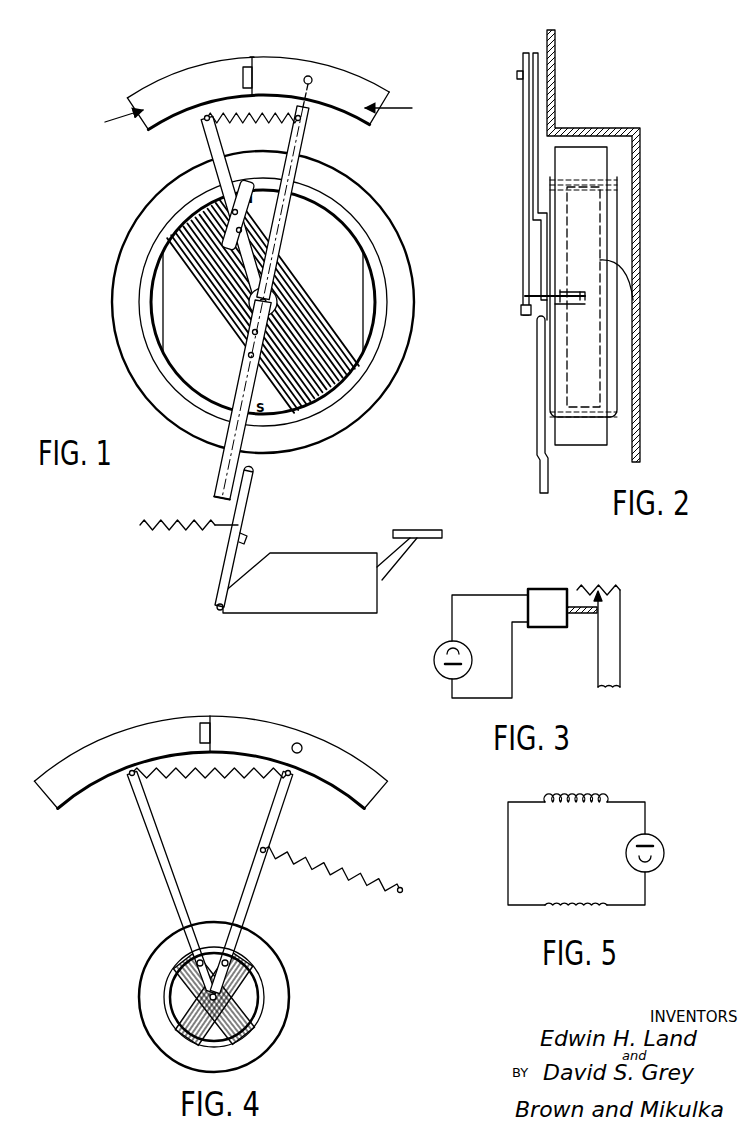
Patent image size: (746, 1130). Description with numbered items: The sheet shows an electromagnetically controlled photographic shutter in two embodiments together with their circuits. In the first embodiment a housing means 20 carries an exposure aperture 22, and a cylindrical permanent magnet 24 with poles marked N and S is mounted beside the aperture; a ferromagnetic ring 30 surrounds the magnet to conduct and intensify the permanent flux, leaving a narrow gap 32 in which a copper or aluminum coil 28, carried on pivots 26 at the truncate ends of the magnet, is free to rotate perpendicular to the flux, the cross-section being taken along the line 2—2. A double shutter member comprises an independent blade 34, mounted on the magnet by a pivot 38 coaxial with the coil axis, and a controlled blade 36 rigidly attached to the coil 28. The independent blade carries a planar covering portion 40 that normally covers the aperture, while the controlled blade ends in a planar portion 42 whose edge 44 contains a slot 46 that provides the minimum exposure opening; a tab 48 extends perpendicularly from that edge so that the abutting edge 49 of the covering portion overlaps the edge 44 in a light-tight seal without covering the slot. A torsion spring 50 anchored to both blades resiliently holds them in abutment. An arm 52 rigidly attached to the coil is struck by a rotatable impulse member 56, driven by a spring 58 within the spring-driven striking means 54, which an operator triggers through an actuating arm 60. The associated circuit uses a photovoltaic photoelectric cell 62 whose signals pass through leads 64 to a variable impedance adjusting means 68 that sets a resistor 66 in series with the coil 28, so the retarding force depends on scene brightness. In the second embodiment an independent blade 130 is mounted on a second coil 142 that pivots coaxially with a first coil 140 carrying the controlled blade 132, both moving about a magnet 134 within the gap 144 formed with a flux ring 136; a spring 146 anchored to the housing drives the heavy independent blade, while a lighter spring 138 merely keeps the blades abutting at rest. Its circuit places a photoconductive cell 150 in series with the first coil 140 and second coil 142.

In FIG. 1, the section line 2— 2 is at (300, 36).
In FIG. 2, the housing means 20 is at (617, 246).
In FIG. 1, the exposure aperture 22 is at (313, 78).
In FIG. 2, the exposure aperture 22 is at (557, 72).
In FIG. 4, the exposure aperture 22 is at (302, 745).
In FIG. 1, the permanent magnet 24 is at (340, 235).
In FIG. 2, the permanent magnet 24 is at (592, 377).
In FIG. 2, the pivots 26 is at (607, 300).
In FIG. 1, the coil 28 is at (172, 252).
In FIG. 2, the coil 28 is at (612, 223).
In FIG. 3, the coil 28 is at (612, 691).
In FIG. 1, the ring 30 is at (400, 286).
In FIG. 2, the ring 30 is at (600, 160).
In FIG. 1, the gap 32 is at (318, 194).
In FIG. 2, the gap 32 is at (606, 180).
In FIG. 1, the independent blade 34 is at (402, 113).
In FIG. 2, the independent blade 34 is at (523, 174).
In FIG. 1, the controlled blade 36 is at (109, 125).
In FIG. 2, the controlled blade 36 is at (539, 100).
In FIG. 1, the pivot 38 is at (262, 303).
In FIG. 2, the pivot 38 is at (538, 300).
In FIG. 1, the covering portion 40 is at (366, 88).
In FIG. 1, the planar portion 42 is at (194, 74).
In FIG. 1, the edge 44 is at (262, 97).
In FIG. 1, the slot 46 is at (253, 74).
In FIG. 1, the tab 48 is at (247, 90).
In FIG. 2, the tab 48 is at (515, 78).
In FIG. 1, the abutting edge 49 is at (244, 57).
In FIG. 1, the torsion spring 50 is at (270, 123).
In FIG. 1, the arm 52 is at (222, 462).
In FIG. 2, the arm 52 is at (540, 478).
In FIG. 1, the means for imparting aperture-uncovering movement 54 is at (305, 592).
In FIG. 1, the impulse member 56 is at (248, 505).
In FIG. 1, the spring 58 is at (152, 522).
In FIG. 1, the actuating arm 60 is at (415, 530).
In FIG. 3, the photoelectric cell 62 is at (434, 660).
In FIG. 3, the leads 64 is at (505, 632).
In FIG. 3, the resistor 66 is at (600, 585).
In FIG. 3, the variable impedance adjusting means 68 is at (543, 600).
In FIG. 4, the independent blade 130 is at (357, 760).
In FIG. 4, the controlled blade 132 is at (73, 752).
In FIG. 4, the magnet 134 is at (255, 983).
In FIG. 4, the flux ring 136 is at (276, 986).
In FIG. 4, the spring 138 is at (190, 778).
In FIG. 4, the first coil 140 is at (260, 1016).
In FIG. 5, the first coil 140 is at (584, 800).
In FIG. 4, the second coil 142 is at (182, 982).
In FIG. 5, the second coil 142 is at (570, 910).
In FIG. 4, the gap 144 is at (254, 1032).
In FIG. 4, the spring 146 is at (345, 888).
In FIG. 5, the photoconductive cell 150 is at (664, 850).